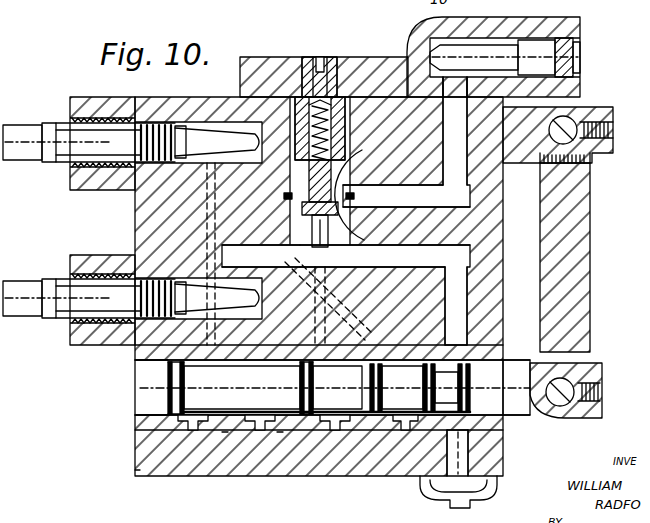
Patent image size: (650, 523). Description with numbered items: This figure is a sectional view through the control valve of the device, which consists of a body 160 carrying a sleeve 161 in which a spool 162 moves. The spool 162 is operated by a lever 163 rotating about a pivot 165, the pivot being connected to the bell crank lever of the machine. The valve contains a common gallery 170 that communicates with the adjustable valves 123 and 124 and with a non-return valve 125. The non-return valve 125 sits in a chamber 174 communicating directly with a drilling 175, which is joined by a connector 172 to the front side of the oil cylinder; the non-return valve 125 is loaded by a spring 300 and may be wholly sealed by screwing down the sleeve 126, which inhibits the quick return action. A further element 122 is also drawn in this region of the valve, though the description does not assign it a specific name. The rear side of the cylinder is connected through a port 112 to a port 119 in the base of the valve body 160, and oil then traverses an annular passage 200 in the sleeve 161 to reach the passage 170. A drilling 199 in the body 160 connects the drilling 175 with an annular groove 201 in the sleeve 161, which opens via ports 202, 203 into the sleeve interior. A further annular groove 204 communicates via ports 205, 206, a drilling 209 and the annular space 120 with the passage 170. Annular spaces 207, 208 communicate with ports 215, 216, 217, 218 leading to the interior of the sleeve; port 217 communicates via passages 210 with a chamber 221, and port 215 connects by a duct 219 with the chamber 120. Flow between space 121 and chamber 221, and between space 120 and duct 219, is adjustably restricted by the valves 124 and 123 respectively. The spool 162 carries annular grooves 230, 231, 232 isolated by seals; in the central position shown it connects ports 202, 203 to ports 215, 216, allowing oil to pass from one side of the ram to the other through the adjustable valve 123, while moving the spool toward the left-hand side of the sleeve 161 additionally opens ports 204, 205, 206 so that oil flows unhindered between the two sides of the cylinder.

The port 112 is at (478, 498).
The port 119 is at (462, 470).
The annular space 120 is at (212, 272).
The space 121 is at (222, 165).
The passage 122 is at (347, 217).
The adjustable valve 123 is at (75, 298).
The adjustable valve 124 is at (70, 135).
The non-return valve 125 is at (343, 207).
The sleeve 126 is at (238, 99).
The body 160 is at (288, 460).
The sleeve 161 is at (135, 418).
The spool 162 is at (165, 389).
The lever 163 is at (563, 295).
The pivot 165 is at (574, 115).
The common gallery 170 is at (506, 185).
The connector 172 is at (535, 60).
The chamber 174 is at (362, 162).
The drilling 175 is at (408, 62).
The drilling 199 is at (325, 299).
The annular passage 200 is at (460, 445).
The annular groove 201 is at (343, 440).
The port 202 is at (325, 362).
The port 203 is at (345, 405).
The annular groove 204 is at (136, 433).
The port 205 is at (137, 377).
The port 206 is at (224, 437).
The annular space 207 is at (272, 437).
The annular space 208 is at (400, 410).
The drilling 209 is at (136, 353).
The passage 210 is at (428, 258).
The port 215 is at (270, 343).
The port 216 is at (247, 428).
The port 217 is at (401, 348).
The port 218 is at (347, 408).
The duct 219 is at (280, 270).
The chamber 221 is at (258, 140).
The annular groove 230 is at (137, 457).
The annular groove 231 is at (280, 437).
The annular groove 232 is at (415, 445).
The spring 300 is at (288, 125).